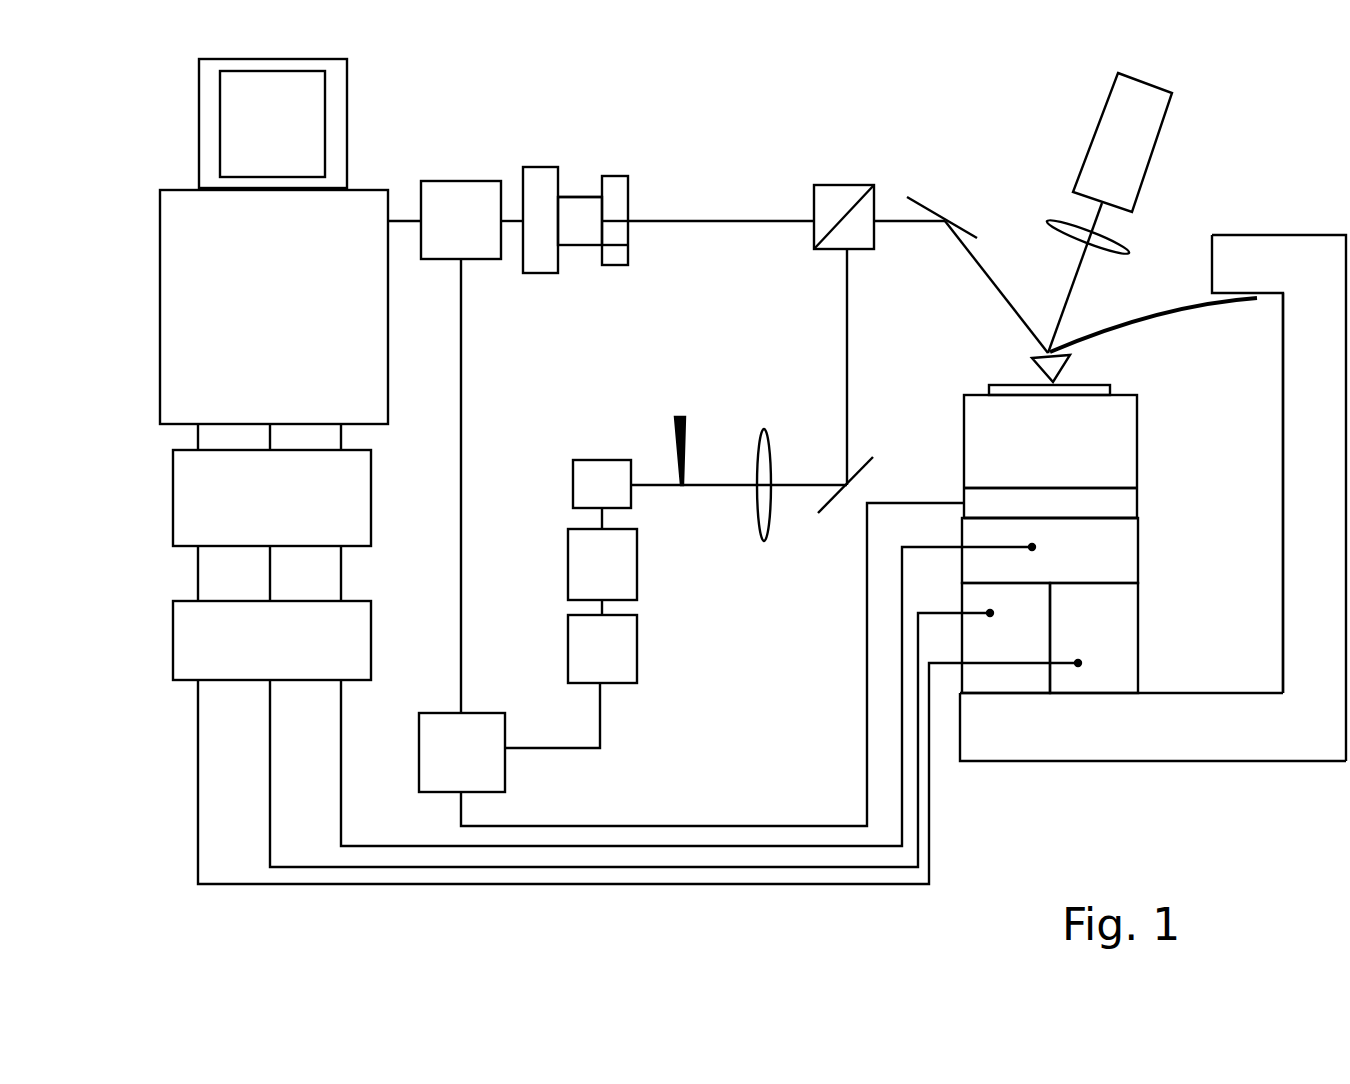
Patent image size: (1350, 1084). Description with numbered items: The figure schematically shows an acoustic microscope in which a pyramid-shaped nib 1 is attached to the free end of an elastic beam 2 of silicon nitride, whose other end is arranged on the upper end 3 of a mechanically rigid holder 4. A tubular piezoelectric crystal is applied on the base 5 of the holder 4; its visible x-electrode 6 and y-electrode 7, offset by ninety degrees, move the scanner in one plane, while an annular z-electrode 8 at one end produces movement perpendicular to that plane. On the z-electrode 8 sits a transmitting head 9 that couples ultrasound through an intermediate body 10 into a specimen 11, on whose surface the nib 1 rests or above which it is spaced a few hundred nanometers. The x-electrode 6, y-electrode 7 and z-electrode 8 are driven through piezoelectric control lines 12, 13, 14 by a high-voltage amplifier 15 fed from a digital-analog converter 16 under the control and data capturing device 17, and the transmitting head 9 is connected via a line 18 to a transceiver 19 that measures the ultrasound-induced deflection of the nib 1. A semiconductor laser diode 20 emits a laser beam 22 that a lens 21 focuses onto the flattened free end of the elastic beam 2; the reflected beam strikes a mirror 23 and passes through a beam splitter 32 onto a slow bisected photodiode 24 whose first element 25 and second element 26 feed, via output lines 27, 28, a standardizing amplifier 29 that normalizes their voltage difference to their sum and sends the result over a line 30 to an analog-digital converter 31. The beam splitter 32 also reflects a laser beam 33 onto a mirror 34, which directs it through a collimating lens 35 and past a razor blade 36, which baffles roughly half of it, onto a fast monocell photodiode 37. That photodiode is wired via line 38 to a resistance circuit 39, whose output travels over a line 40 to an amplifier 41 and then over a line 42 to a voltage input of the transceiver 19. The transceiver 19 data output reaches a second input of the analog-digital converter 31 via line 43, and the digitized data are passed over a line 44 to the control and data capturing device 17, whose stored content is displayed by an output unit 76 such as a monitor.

The nib 1 is at (1058, 366).
The elastic beam 2 is at (1173, 318).
The upper end 3 is at (1238, 235).
The holder 4 is at (1301, 523).
The base 5 is at (1132, 762).
The x-electrode 6 is at (1082, 646).
The y-electrode 7 is at (1007, 646).
The z-electrode 8 is at (1067, 574).
The transmitting head 9 is at (1123, 503).
The intermediate body 10 is at (1024, 464).
The specimen 11 is at (1008, 388).
The piezoelectric control line 12 is at (563, 884).
The piezoelectric control line 13 is at (655, 867).
The piezoelectric control line 14 is at (758, 846).
The high-voltage amplifier 15 is at (254, 659).
The digital-analog converter 16 is at (254, 516).
The control and data capturing device 17 is at (254, 316).
The line 18 is at (867, 743).
The transceiver 19 is at (446, 770).
The semiconductor laser diode 20 is at (1107, 158).
The lens 21 is at (1062, 225).
The laser beam 22 is at (728, 217).
The mirror 23 is at (925, 207).
The bisected photodiode 24 is at (612, 172).
The first element 25 is at (618, 200).
The second element 26 is at (618, 245).
The output line 27 is at (575, 197).
The output line 28 is at (580, 245).
The standardizing amplifier 29 is at (540, 248).
The line 30 is at (508, 221).
The analog-digital converter 31 is at (444, 239).
The beam splitter 32 is at (835, 198).
The reflected laser beam 33 is at (847, 347).
The mirror 34 is at (835, 503).
The collimating lens 35 is at (765, 523).
The razor blade 36 is at (683, 430).
The monocell photodiode 37 is at (586, 504).
The line 38 is at (600, 522).
The resistance circuit 39 is at (586, 584).
The line 40 is at (600, 606).
The amplifier 41 is at (586, 668).
The line 42 is at (602, 720).
The line 43 is at (461, 383).
The line 44 is at (402, 221).
The output unit 76 is at (255, 136).